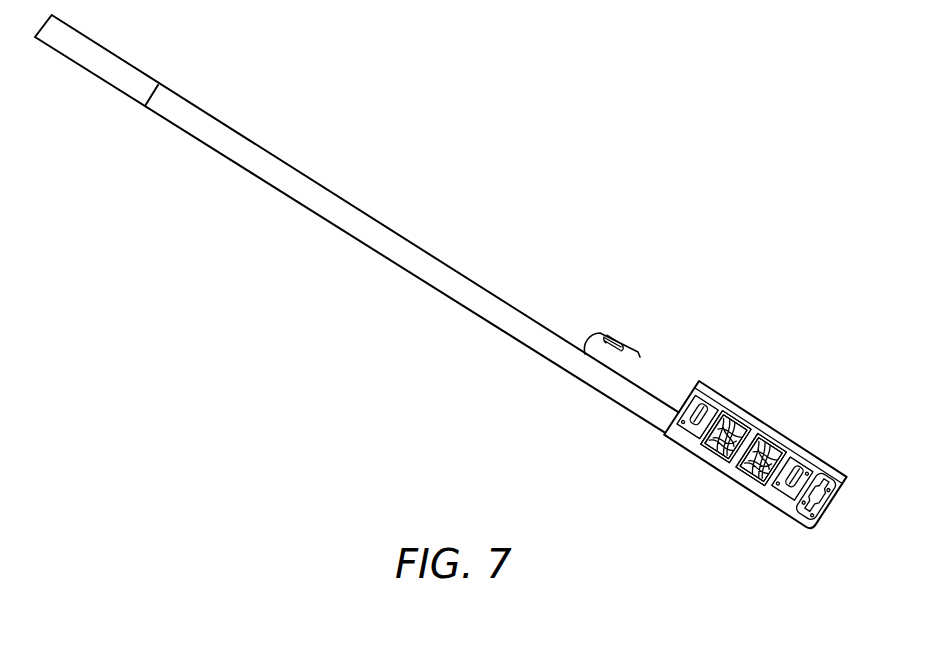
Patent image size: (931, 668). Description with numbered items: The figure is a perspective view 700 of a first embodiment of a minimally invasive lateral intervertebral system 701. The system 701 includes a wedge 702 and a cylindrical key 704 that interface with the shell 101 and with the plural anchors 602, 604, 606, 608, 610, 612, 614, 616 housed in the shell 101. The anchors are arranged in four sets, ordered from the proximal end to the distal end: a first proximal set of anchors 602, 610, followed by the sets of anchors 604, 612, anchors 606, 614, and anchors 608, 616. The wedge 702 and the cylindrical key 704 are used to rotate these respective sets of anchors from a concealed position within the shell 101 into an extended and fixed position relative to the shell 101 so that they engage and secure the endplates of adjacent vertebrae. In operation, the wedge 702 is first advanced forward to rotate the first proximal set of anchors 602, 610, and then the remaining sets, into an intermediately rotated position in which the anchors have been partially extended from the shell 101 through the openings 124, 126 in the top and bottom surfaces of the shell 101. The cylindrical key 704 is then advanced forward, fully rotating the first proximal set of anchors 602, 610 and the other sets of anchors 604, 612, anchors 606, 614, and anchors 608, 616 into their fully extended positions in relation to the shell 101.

The perspective view 700 is at (430, 142).
The minimally invasive lateral intervertebral system 701 is at (423, 288).
The wedge 702 is at (412, 242).
The cylindrical key 704 is at (637, 346).
The shell 101 is at (700, 379).
The opening 124 is at (697, 441).
The opening 126 is at (772, 498).
The anchor 602 is at (718, 440).
The anchor 604 is at (732, 455).
The anchor 606 is at (756, 462).
The anchor 608 is at (770, 497).
The anchor 610 is at (732, 413).
The anchor 612 is at (743, 418).
The anchor 614 is at (768, 435).
The anchor 616 is at (782, 447).